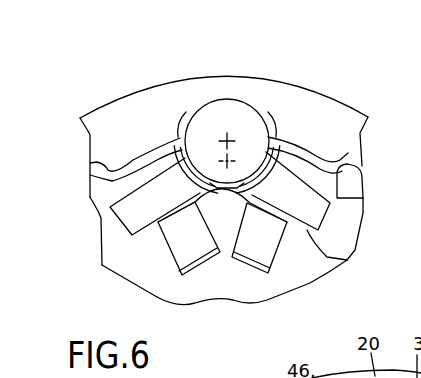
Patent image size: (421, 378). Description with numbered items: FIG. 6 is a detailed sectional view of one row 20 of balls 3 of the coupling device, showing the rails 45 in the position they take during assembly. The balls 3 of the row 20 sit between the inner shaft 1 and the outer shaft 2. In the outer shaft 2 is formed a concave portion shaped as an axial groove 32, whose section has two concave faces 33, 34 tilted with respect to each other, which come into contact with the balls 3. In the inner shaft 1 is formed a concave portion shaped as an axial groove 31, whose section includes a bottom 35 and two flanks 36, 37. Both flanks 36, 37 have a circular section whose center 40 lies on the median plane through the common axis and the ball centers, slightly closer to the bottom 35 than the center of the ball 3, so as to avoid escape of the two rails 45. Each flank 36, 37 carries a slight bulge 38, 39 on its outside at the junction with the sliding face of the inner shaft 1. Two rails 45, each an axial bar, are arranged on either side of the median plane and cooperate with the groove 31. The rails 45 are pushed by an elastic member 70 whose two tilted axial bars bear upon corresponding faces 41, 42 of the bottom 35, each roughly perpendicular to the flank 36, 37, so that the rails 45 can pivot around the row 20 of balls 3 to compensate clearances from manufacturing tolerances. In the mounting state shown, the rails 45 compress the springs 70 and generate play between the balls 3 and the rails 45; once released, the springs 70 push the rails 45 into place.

The inner shaft 1 is at (165, 274).
The outer shaft 2 is at (312, 110).
The balls 3 is at (235, 115).
The axial row 20 is at (214, 114).
The axial groove 31 is at (222, 209).
The axial groove 32 is at (220, 100).
The concave face 33 is at (183, 117).
The concave face 34 is at (263, 113).
The bottom 35 is at (296, 232).
The flank 36 is at (100, 202).
The flank 37 is at (360, 200).
The slight bulge 38 is at (100, 172).
The slight bulge 39 is at (352, 168).
The center 40 is at (283, 137).
The face 41 is at (347, 260).
The face 42 is at (102, 265).
The rails 45 is at (140, 208).
The elastic member 70 is at (197, 198).